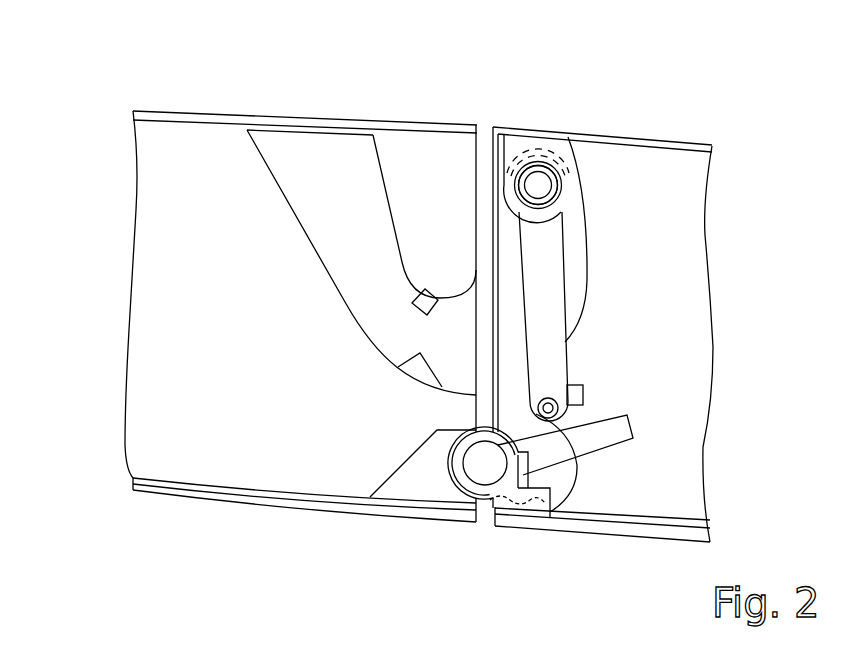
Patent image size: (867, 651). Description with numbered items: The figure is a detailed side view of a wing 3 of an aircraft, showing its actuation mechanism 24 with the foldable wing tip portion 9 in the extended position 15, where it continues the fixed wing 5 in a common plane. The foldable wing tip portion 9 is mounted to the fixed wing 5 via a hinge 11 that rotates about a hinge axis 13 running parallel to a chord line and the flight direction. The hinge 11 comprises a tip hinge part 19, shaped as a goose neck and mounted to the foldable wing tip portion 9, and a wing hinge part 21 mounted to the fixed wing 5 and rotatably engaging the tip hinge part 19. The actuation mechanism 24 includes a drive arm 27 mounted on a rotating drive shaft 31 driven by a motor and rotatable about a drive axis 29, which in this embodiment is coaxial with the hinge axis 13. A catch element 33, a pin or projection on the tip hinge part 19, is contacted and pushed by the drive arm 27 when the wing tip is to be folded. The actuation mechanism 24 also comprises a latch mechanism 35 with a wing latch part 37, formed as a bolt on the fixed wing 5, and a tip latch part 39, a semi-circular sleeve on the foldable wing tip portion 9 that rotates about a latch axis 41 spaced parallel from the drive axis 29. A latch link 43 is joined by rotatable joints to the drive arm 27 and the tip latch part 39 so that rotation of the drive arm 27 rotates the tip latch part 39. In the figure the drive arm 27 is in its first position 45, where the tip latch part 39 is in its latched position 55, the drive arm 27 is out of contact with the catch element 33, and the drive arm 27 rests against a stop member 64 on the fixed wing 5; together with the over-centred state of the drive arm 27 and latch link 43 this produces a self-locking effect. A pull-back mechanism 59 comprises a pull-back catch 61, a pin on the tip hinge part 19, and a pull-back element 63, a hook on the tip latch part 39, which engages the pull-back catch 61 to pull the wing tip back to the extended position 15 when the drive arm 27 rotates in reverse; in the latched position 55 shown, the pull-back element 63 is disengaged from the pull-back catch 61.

The wing 3 is at (72, 129).
The extended position 15 is at (170, 84).
The foldable wing tip portion 9 is at (223, 323).
The tip hinge part 19 is at (343, 188).
The catch element 33 is at (427, 297).
The pull-back catch 61 is at (410, 373).
The latch axis 41 is at (478, 463).
The latched position 55 is at (428, 536).
The first position 45 is at (748, 221).
The fixed wing 5 is at (662, 323).
The actuation mechanism 24 is at (593, 193).
The wing hinge part 21 is at (512, 148).
The hinge axis 13 is at (536, 182).
The drive axis 29 is at (538, 185).
The hinge 11 is at (548, 186).
The drive shaft 31 is at (552, 188).
The drive arm 27 is at (553, 374).
The stop member 64 is at (583, 394).
The pull-back element 63 is at (620, 432).
The pull-back mechanism 59 is at (650, 452).
The tip latch part 39 is at (528, 462).
The latch link 43 is at (565, 481).
The wing latch part 37 is at (485, 472).
The latch mechanism 35 is at (510, 553).